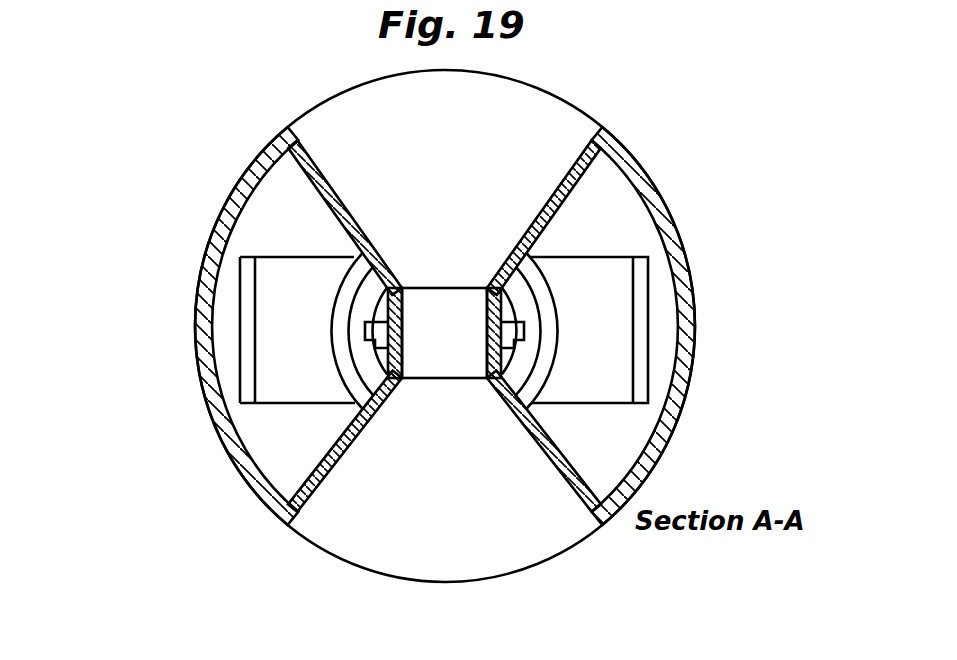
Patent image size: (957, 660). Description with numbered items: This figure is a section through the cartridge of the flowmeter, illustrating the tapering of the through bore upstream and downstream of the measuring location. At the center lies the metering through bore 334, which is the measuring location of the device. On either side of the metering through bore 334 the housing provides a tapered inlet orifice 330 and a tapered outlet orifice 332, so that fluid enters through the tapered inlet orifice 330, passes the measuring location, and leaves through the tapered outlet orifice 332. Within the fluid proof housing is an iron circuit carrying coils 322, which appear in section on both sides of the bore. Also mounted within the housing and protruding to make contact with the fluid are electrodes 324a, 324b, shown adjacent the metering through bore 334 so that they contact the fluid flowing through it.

The tapered inlet orifice 330 is at (552, 132).
The tapered outlet orifice 332 is at (537, 527).
The coils 322 is at (636, 354).
The electrode 324a is at (522, 327).
The electrode 324b is at (383, 325).
The metering through bore 334 is at (470, 344).